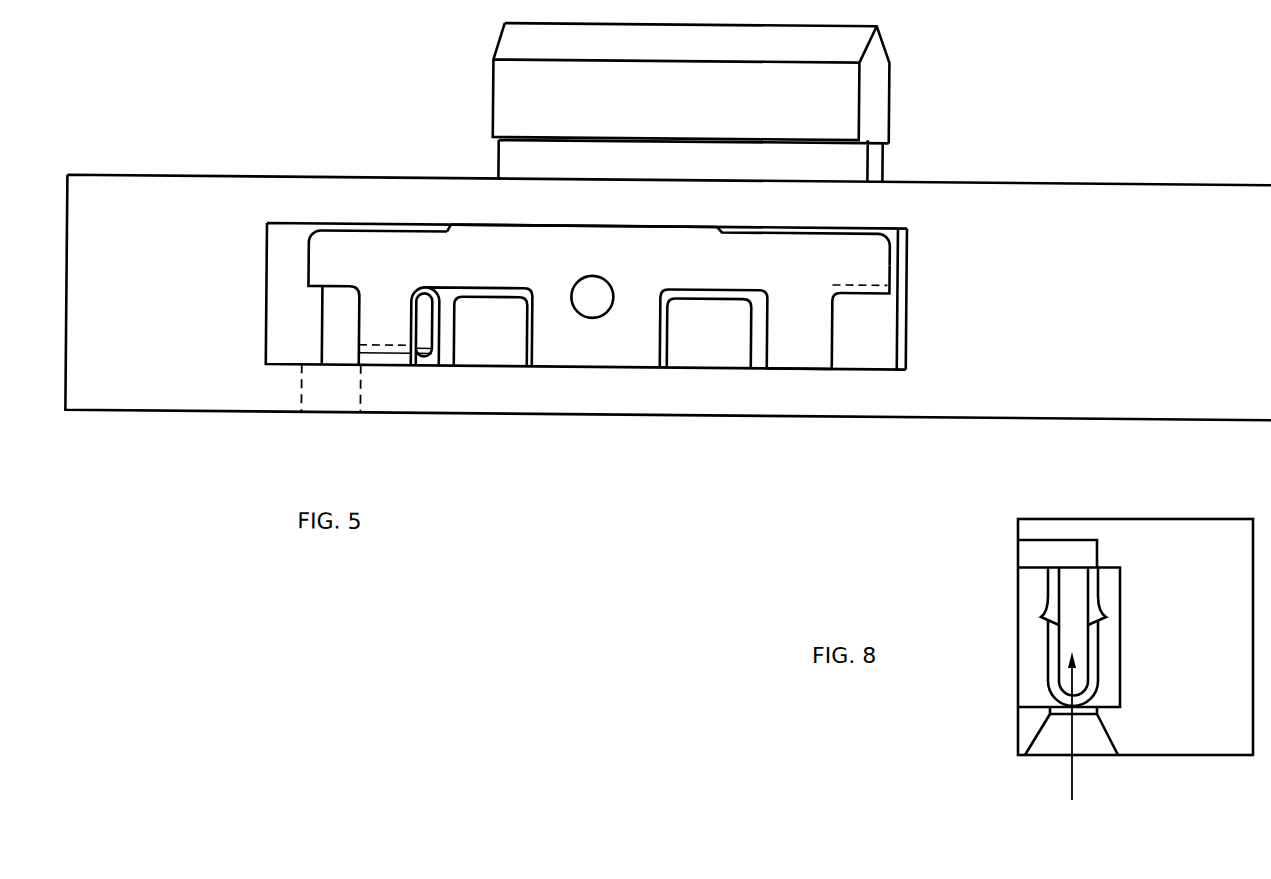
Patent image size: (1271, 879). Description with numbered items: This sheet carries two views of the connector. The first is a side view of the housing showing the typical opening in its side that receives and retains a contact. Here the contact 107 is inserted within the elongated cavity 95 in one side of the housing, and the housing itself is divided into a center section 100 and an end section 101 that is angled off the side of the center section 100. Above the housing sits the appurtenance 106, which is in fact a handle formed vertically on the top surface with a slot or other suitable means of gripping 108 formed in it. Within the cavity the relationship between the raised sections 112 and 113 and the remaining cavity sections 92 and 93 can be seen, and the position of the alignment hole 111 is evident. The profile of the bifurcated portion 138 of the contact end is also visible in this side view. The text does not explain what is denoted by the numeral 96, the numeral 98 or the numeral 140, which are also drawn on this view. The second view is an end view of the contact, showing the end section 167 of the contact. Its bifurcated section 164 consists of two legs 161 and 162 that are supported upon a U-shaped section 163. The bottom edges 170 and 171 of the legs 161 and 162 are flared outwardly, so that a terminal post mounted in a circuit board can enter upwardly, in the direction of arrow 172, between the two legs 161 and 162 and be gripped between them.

In FIG. 5, the cavity section 92 is at (550, 237).
In FIG. 5, the cavity section 93 is at (790, 253).
In FIG. 5, the elongated cavity 95 is at (342, 349).
In FIG. 5, the contact left portion 96 is at (377, 242).
In FIG. 5, the hole in circuit board 98 is at (332, 399).
In FIG. 5, the center section 100 is at (680, 173).
In FIG. 5, the end section 101 is at (187, 308).
In FIG. 5, the appurtenance 106 is at (850, 77).
In FIG. 5, the contact 107 is at (473, 231).
In FIG. 5, the means of gripping 108 is at (860, 160).
In FIG. 5, the alignment hole 111 is at (603, 294).
In FIG. 5, the raised section 112 is at (493, 341).
In FIG. 5, the raised section 113 is at (712, 341).
In FIG. 5, the bifurcated portion 138 is at (868, 268).
In FIG. 5, the bottom wall 140 is at (802, 357).
In FIG. 8, the leg 161 is at (1097, 603).
In FIG. 8, the leg 162 is at (1050, 592).
In FIG. 8, the U-shaped section 163 is at (1087, 689).
In FIG. 8, the bifurcated section 164 is at (1089, 555).
In FIG. 8, the end section 167 is at (1002, 603).
In FIG. 8, the bottom edge 170 is at (1100, 622).
In FIG. 8, the bottom edge 171 is at (1048, 622).
In FIG. 8, the arrow 172 is at (1070, 776).